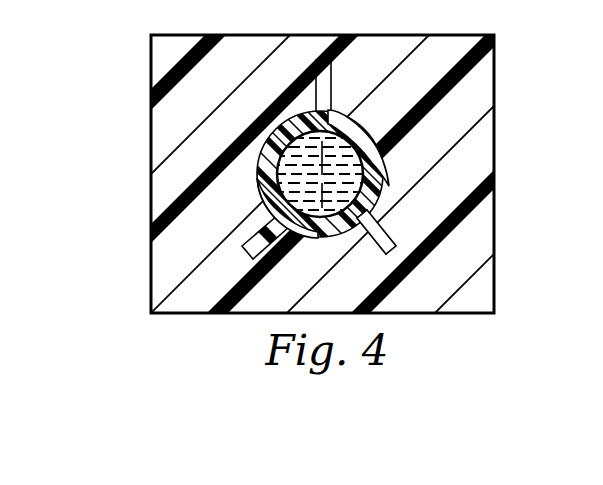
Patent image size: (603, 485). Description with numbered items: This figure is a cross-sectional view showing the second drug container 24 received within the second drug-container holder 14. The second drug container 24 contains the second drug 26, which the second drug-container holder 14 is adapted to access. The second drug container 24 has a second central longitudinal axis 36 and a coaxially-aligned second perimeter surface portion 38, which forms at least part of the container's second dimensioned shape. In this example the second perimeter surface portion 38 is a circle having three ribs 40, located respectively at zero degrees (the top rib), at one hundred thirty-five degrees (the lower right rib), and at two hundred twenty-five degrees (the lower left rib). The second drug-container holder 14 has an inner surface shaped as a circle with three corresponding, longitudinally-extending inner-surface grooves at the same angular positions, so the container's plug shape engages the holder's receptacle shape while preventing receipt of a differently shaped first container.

The second drug-container holder 14 is at (131, 268).
The second drug container 24 is at (245, 179).
The second drug 26 is at (347, 188).
The second central longitudinal axis 36 is at (321, 170).
The second perimeter surface portion 38 is at (360, 133).
The ribs 40 is at (325, 77).